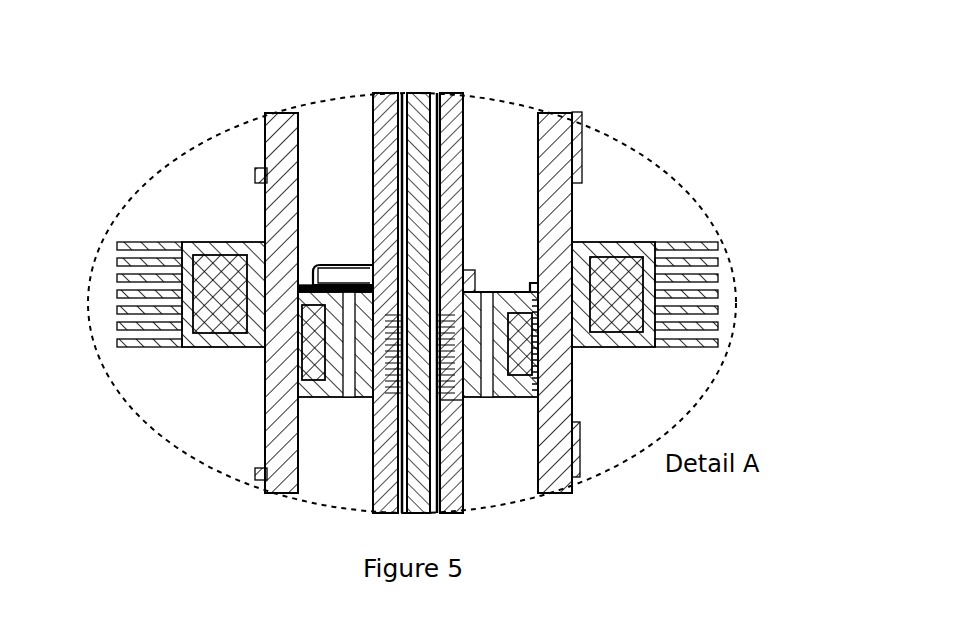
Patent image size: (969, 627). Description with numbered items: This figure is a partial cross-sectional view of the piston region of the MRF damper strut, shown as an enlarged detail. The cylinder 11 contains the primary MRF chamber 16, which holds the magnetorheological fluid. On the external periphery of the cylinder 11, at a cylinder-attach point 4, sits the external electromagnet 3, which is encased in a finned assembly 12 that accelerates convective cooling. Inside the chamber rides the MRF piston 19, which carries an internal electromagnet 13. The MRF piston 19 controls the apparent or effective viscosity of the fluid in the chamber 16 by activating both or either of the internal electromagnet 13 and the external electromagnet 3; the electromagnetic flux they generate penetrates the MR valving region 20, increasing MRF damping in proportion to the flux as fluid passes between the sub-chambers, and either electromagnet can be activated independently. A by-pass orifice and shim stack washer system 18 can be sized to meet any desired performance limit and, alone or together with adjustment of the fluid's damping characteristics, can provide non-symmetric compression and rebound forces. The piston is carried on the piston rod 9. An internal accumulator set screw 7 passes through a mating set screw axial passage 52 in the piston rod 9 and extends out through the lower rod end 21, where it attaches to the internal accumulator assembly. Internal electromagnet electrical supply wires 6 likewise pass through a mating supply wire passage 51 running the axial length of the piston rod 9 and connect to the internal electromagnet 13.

The external electromagnet 3 is at (615, 292).
The cylinder-attach point 4 is at (258, 168).
The internal electromagnet electrical supply wires 6 is at (346, 265).
The internal accumulator set screw 7 is at (413, 110).
The piston rod 9 is at (465, 165).
The cylinder 11 is at (265, 409).
The finned assembly 12 is at (145, 242).
The internal electromagnet 13 is at (515, 343).
The primary MRF chamber 16 is at (507, 201).
The by-pass orifice and shim stack washer system 18 is at (336, 291).
The MRF piston 19 is at (324, 382).
The MR valving region 20 is at (532, 392).
The lower rod end 21 is at (465, 440).
The supply wire passage 51 is at (402, 110).
The set screw axial passage 52 is at (437, 118).